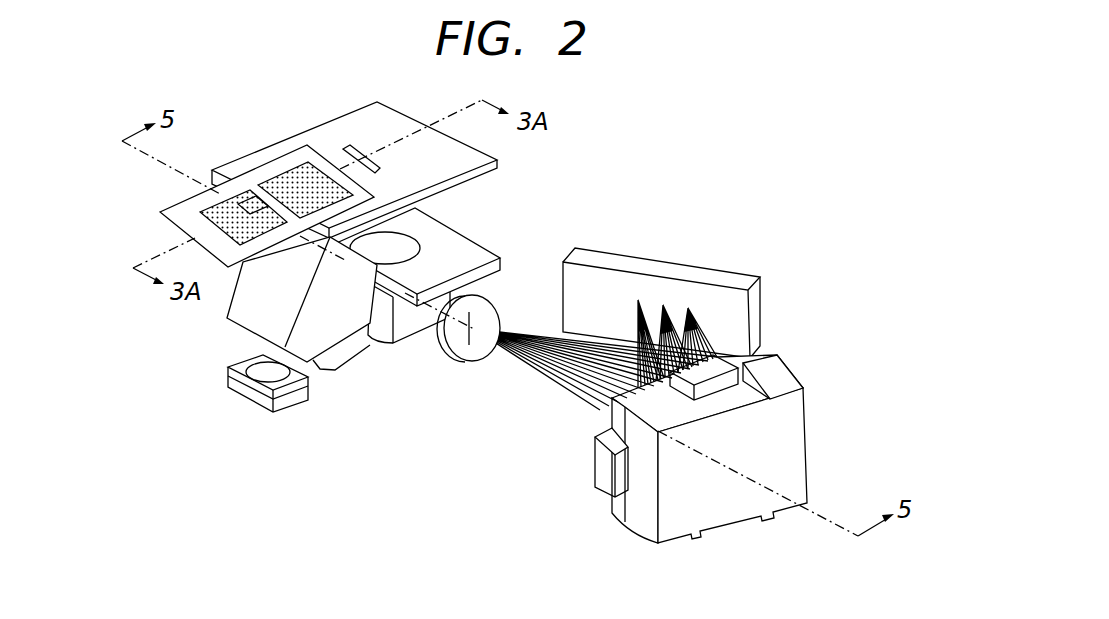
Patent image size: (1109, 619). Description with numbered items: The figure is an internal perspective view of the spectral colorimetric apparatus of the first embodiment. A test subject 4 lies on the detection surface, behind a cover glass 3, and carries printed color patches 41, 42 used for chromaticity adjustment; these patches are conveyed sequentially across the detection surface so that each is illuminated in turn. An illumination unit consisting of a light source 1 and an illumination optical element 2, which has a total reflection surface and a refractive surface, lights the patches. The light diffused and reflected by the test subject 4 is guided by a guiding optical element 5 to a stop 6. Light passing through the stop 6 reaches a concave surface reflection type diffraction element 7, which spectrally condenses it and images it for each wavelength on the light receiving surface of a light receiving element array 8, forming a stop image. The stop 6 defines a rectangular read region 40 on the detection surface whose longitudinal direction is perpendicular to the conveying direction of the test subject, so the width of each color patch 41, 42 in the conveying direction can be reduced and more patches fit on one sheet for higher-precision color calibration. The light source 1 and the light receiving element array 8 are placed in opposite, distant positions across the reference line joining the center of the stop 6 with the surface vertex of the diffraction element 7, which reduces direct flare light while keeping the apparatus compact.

The light source 1 is at (253, 388).
The illumination optical element 2 is at (330, 337).
The cover glass 3 is at (500, 163).
The test subject 4 is at (290, 154).
The guiding optical element 5 is at (448, 237).
The stop 6 is at (447, 357).
The concave surface reflection type diffraction element 7 is at (680, 502).
The light receiving element array 8 is at (715, 278).
The rectangular read region 40 is at (344, 148).
The color patch 41 is at (273, 177).
The color patch 42 is at (202, 210).